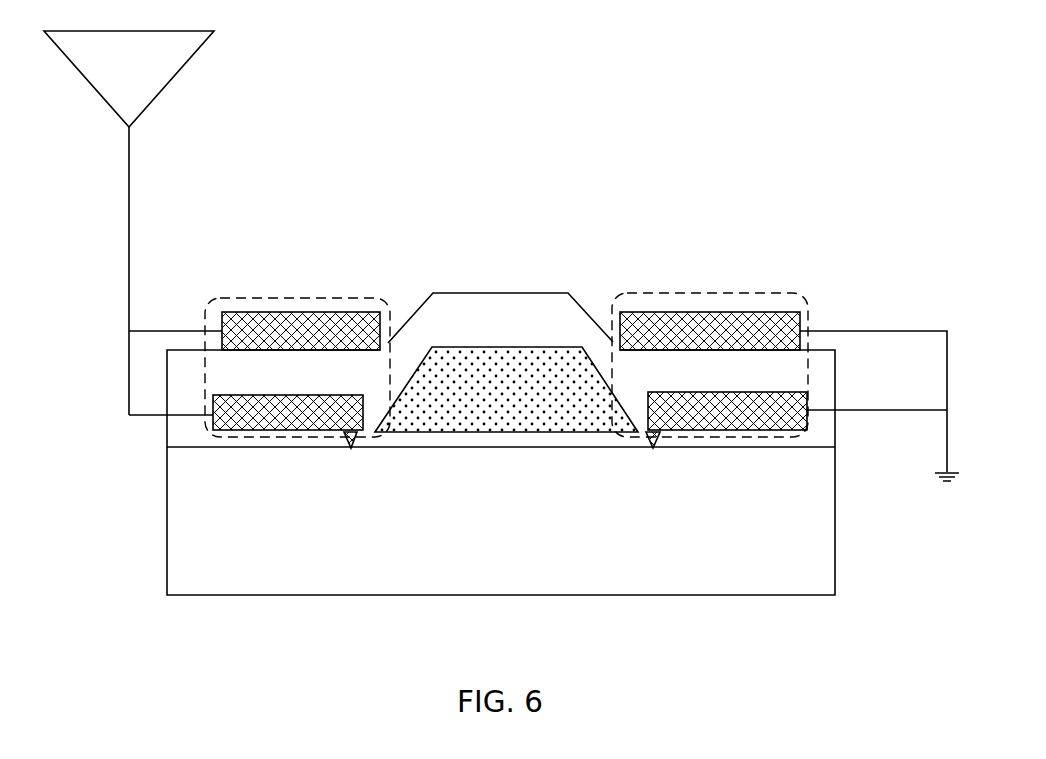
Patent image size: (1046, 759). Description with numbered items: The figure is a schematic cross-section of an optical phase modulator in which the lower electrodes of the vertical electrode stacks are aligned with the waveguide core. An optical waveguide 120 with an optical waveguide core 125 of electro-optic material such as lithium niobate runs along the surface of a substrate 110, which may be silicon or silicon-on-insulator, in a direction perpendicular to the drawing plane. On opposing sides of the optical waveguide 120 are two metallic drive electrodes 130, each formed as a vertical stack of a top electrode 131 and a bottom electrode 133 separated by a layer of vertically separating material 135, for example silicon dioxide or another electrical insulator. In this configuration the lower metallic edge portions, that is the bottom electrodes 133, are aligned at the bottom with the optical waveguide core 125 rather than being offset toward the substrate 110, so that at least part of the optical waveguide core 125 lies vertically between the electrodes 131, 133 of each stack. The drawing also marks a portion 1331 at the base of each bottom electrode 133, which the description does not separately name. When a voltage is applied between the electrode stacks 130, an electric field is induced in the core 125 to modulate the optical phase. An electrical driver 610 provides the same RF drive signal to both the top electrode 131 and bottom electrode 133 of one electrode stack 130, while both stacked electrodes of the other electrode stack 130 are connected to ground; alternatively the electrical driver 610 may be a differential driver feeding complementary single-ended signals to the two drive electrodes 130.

The substrate 110 is at (197, 578).
The optical waveguide 120 is at (462, 240).
The optical waveguide core 125 is at (480, 418).
The electrode stack 130 is at (298, 297).
The top electrode 131 is at (245, 310).
The bottom electrode 133 is at (283, 433).
The electrode contact portion 1331 is at (351, 440).
The vertically separating material 135 is at (216, 385).
The electrical driver 610 is at (108, 68).